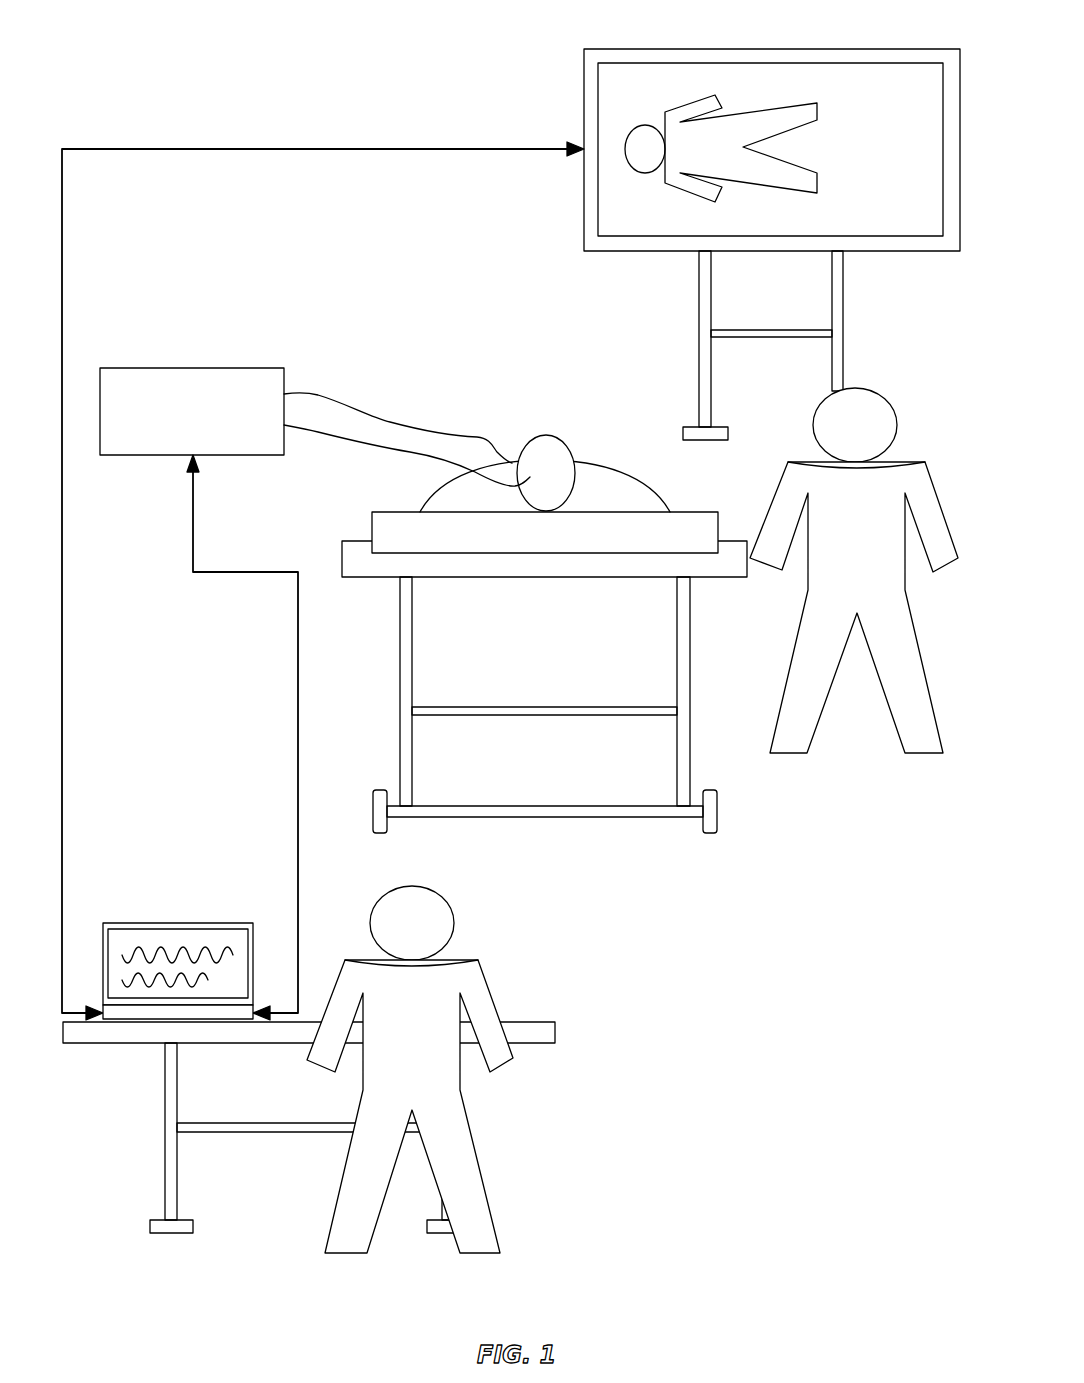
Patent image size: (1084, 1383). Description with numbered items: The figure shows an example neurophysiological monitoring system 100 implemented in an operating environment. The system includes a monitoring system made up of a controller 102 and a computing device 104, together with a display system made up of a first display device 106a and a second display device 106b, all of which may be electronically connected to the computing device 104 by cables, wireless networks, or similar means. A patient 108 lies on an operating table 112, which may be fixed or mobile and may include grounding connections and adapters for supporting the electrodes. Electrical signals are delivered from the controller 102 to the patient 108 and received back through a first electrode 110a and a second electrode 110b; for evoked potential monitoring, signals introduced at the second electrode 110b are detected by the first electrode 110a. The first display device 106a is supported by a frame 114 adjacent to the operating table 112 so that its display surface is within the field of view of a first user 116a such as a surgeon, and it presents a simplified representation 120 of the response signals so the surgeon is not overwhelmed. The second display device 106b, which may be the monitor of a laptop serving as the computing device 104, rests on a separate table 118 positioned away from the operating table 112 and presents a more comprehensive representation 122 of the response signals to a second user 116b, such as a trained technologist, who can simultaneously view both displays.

The neurophysiological monitoring system 100 is at (152, 52).
The controller 102 is at (192, 411).
The computing device 104 is at (180, 1023).
The first display device 106a is at (771, 49).
The second display device 106b is at (180, 923).
The patient 108 is at (552, 435).
The first electrode 110a is at (390, 448).
The second electrode 110b is at (318, 395).
The operating table 112 is at (543, 577).
The frame 114 is at (699, 343).
The first user 116a is at (853, 388).
The second user 116b is at (410, 887).
The table 118 is at (555, 1022).
The simplified representation 120 is at (817, 173).
The comprehensive representation 122 is at (208, 947).